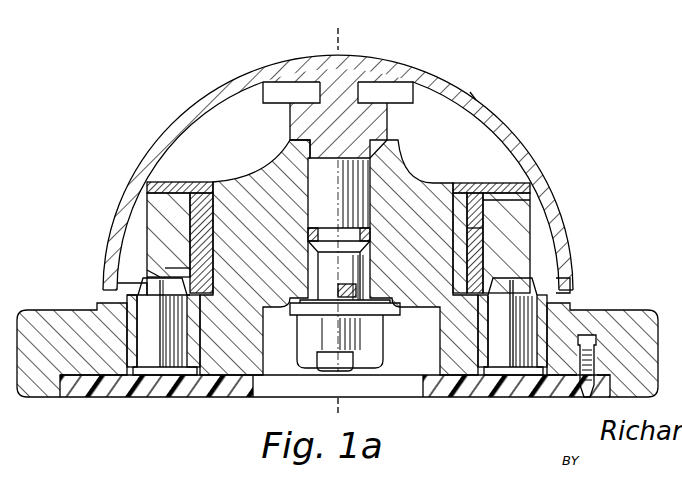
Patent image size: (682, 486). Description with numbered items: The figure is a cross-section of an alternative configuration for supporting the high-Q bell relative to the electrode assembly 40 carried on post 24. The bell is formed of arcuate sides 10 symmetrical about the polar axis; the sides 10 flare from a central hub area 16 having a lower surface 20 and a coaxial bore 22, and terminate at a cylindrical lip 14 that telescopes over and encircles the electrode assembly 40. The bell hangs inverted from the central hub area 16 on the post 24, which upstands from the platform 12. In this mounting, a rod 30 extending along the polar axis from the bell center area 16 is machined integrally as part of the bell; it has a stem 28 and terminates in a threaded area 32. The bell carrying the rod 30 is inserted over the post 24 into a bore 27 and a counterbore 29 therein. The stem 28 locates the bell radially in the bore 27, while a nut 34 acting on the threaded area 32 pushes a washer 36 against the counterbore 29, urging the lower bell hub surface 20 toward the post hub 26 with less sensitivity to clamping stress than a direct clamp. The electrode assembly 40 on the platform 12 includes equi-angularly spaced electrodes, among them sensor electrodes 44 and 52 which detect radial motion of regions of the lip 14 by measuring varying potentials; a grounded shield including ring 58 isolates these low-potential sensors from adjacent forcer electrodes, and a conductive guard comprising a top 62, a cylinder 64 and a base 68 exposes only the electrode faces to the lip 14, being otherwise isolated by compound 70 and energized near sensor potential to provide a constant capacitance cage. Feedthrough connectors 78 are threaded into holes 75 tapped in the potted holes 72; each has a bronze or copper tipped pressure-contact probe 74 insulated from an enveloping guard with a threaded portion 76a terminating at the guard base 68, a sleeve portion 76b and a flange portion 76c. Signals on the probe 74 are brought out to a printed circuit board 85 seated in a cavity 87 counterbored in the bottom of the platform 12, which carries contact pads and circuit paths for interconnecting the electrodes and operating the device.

The arcuate sides 10 is at (513, 144).
The platform 12 is at (473, 96).
The cylindrical lip 14 is at (568, 279).
The central hub area 16 is at (302, 98).
The lower surface 20 is at (285, 140).
The coaxial bore 22 is at (336, 216).
The post 24 is at (268, 158).
The post hub 26 is at (402, 150).
The bore 27 is at (306, 262).
The stem 28 is at (352, 214).
The counterbore 29 is at (288, 305).
The rod 30 is at (352, 266).
The threaded area 32 is at (354, 362).
The nut 34 is at (402, 314).
The washer 36 is at (373, 301).
The electrode assembly 40 is at (147, 222).
The electrode 44 is at (155, 195).
The electrode 52 is at (536, 236).
The ring 58 is at (455, 183).
The top 62 is at (488, 200).
The cylinder 64 is at (480, 228).
The base 68 is at (548, 288).
The compound 70 is at (478, 188).
The holes 72 is at (197, 318).
The probe 74 is at (157, 272).
The holes 75 is at (175, 266).
The threaded portion 76a is at (137, 289).
The sleeve portion 76b is at (155, 322).
The flange portion 76c is at (150, 360).
The feedthrough connector 78 is at (176, 343).
The printed circuit board 85 is at (133, 392).
The cavity 87 is at (62, 393).